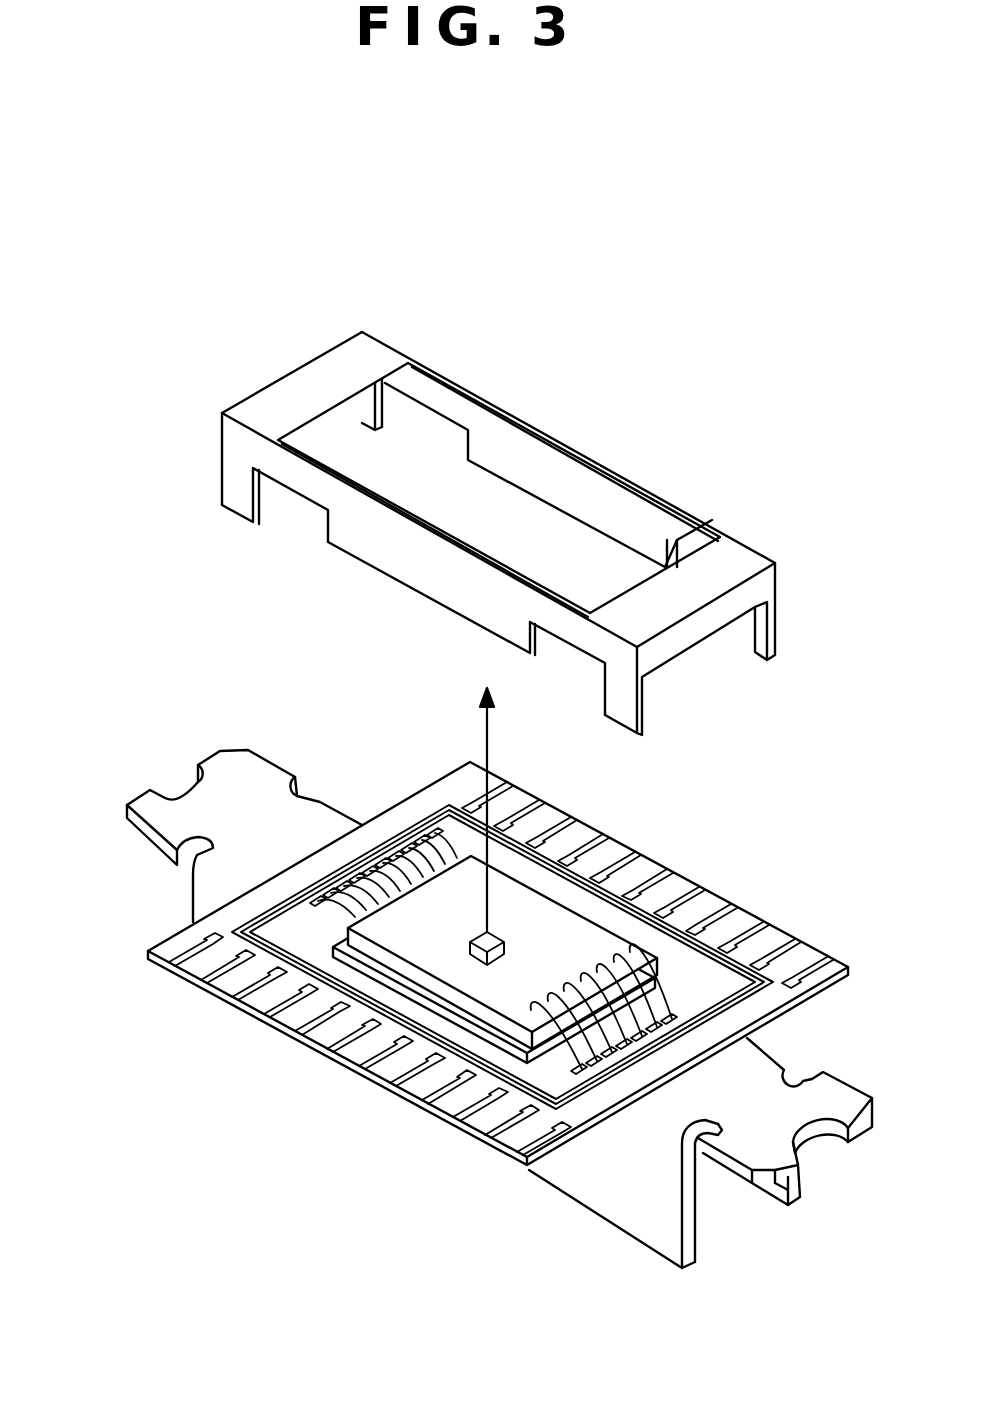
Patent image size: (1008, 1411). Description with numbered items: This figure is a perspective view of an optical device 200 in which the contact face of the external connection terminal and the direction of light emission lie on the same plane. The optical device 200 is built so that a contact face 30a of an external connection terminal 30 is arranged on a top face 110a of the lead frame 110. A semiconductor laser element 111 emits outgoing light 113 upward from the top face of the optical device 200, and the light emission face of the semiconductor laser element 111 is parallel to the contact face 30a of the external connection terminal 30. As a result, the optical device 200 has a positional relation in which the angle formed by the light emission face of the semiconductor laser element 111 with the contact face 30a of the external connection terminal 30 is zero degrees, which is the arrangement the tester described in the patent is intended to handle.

The external connection terminal 30 is at (195, 985).
The contact face 30a is at (222, 968).
The lead frame 110 is at (600, 827).
The top face 110a is at (617, 857).
The semiconductor laser element 111 is at (520, 923).
The outgoing light 113 is at (480, 752).
The optical device 200 is at (697, 882).